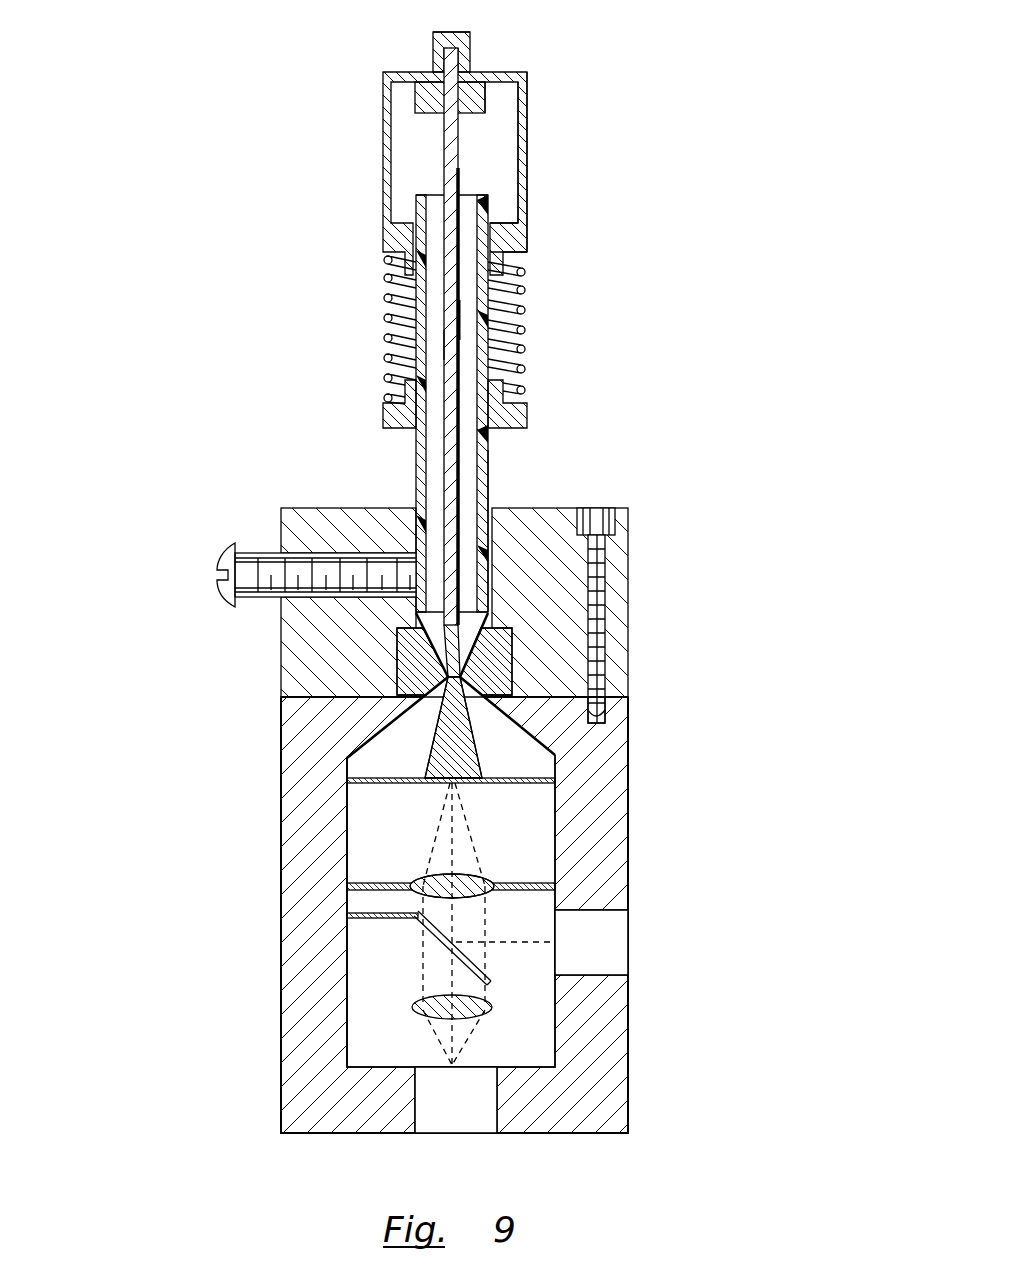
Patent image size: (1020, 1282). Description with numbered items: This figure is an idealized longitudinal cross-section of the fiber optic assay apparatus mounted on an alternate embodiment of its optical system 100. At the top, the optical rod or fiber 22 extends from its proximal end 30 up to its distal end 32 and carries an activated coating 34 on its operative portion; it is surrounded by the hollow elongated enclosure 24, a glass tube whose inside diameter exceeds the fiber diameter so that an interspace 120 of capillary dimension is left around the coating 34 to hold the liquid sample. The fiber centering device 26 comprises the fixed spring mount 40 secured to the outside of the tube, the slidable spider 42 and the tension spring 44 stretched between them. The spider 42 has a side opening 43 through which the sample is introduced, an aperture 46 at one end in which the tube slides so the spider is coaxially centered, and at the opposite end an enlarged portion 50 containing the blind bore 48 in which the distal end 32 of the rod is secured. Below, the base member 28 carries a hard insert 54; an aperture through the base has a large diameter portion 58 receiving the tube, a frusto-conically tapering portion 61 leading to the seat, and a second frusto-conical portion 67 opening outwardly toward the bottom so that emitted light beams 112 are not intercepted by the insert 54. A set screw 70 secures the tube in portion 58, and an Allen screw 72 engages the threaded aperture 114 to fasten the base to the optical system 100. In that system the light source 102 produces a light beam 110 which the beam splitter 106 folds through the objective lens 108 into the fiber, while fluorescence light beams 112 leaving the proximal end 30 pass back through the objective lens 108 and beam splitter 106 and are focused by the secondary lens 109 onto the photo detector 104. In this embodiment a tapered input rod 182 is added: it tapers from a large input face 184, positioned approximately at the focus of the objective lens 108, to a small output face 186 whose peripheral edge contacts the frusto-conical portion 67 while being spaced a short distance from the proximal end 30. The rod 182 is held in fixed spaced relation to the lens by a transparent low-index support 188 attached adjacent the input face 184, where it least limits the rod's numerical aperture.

The optical rod or fiber 22 is at (449, 137).
The hollow elongated enclosure 24 is at (421, 300).
The fiber centering device 26 is at (383, 117).
The base member 28 is at (655, 607).
The proximal end or entrance face 30 is at (444, 708).
The distal or terminal end 32 is at (447, 38).
The coating 34 is at (464, 320).
The fixed spring mount 40 is at (530, 408).
The slidable spider 42 is at (527, 119).
The opening 43 is at (516, 158).
The tension spring 44 is at (526, 293).
The aperture 46 is at (500, 250).
The blind bore 48 is at (458, 68).
The enlarged portion 50 is at (460, 38).
The hard insert 54 is at (400, 651).
The large diameter portion 58 is at (494, 508).
The frusto-conically tapering portion 61 is at (432, 634).
The second frusto-conical portion 67 is at (484, 700).
The set screw 70 is at (270, 538).
The Allen screw 72 is at (604, 593).
The optical system 100 is at (646, 747).
The light source 102 is at (630, 919).
The photo detector 104 is at (483, 1133).
The beam splitter 106 is at (441, 934).
The objective lens 108 is at (432, 884).
The secondary lens 109 is at (438, 1008).
The light beam 110 is at (536, 934).
The light beams 112 is at (438, 826).
The threaded aperture 114 is at (604, 715).
The interspace 120 is at (441, 349).
The tapered input rod 182 is at (446, 749).
The input face 184 is at (462, 786).
The output face 186 is at (468, 672).
The support 188 is at (400, 784).